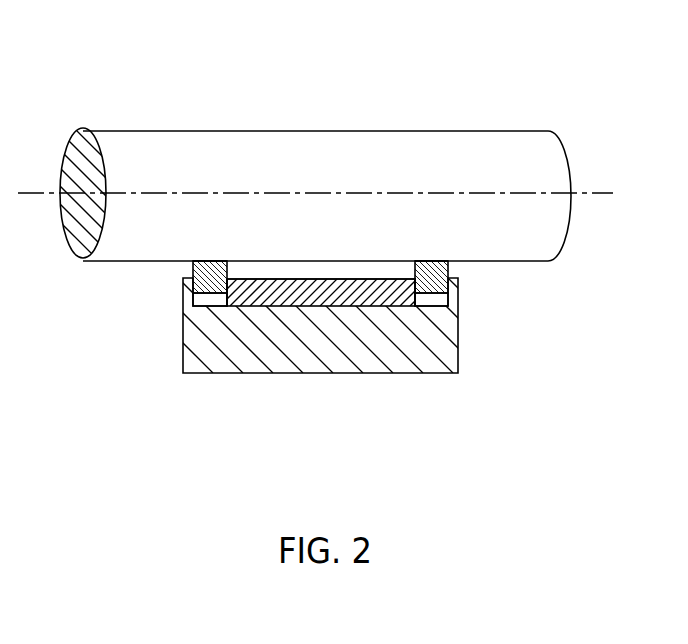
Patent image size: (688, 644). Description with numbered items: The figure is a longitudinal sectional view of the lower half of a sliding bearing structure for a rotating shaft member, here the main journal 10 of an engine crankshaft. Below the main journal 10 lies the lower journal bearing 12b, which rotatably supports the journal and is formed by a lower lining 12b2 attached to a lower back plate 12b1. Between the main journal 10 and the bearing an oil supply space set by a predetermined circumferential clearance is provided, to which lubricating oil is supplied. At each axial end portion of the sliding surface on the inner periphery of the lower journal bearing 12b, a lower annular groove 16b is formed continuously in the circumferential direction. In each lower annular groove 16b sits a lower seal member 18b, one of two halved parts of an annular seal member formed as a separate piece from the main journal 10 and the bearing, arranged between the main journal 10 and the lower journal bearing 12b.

The main journal 10 is at (258, 162).
The lower journal bearing 12b is at (315, 396).
The lower back plate 12b1 is at (263, 340).
The lower lining 12b2 is at (358, 292).
The lower annular groove 16b is at (210, 303).
The lower seal member 18b is at (193, 262).